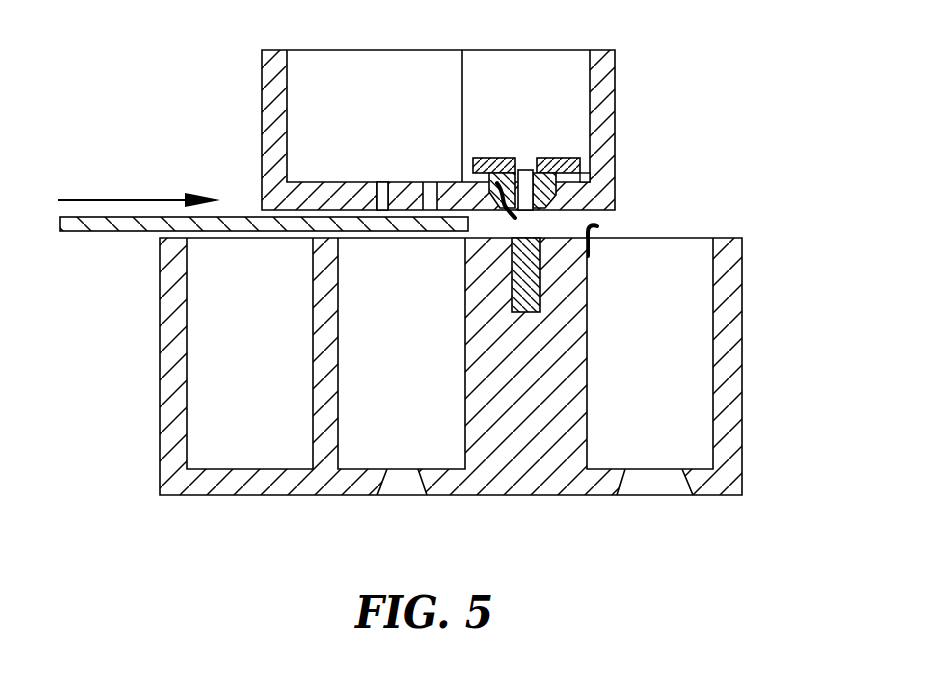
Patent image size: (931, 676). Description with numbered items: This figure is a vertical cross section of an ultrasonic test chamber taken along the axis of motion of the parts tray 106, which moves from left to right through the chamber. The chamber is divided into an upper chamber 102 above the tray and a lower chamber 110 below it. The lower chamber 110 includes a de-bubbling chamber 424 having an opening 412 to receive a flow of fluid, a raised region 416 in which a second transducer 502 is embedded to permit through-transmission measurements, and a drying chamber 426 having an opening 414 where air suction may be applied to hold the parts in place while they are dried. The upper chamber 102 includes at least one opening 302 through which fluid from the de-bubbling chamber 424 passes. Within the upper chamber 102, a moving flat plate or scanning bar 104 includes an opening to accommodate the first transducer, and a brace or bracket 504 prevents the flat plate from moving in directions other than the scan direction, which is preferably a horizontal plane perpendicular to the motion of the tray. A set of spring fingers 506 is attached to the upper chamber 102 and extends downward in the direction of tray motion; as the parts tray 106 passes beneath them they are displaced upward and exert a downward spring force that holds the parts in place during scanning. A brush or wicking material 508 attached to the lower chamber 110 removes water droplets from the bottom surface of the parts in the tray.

The upper chamber 102 is at (615, 72).
The scanning bar 104 is at (517, 170).
The parts tray 106 is at (122, 232).
The lower chamber 110 is at (742, 298).
The opening 302 is at (384, 182).
The opening 412 is at (401, 484).
The opening 414 is at (655, 483).
The raised region 416 is at (465, 262).
The de-bubbling chamber 424 is at (461, 463).
The drying chamber 426 is at (692, 392).
The second transducer 502 is at (538, 307).
The bracket 504 is at (582, 168).
The spring fingers 506 is at (515, 219).
The wicking material 508 is at (598, 226).